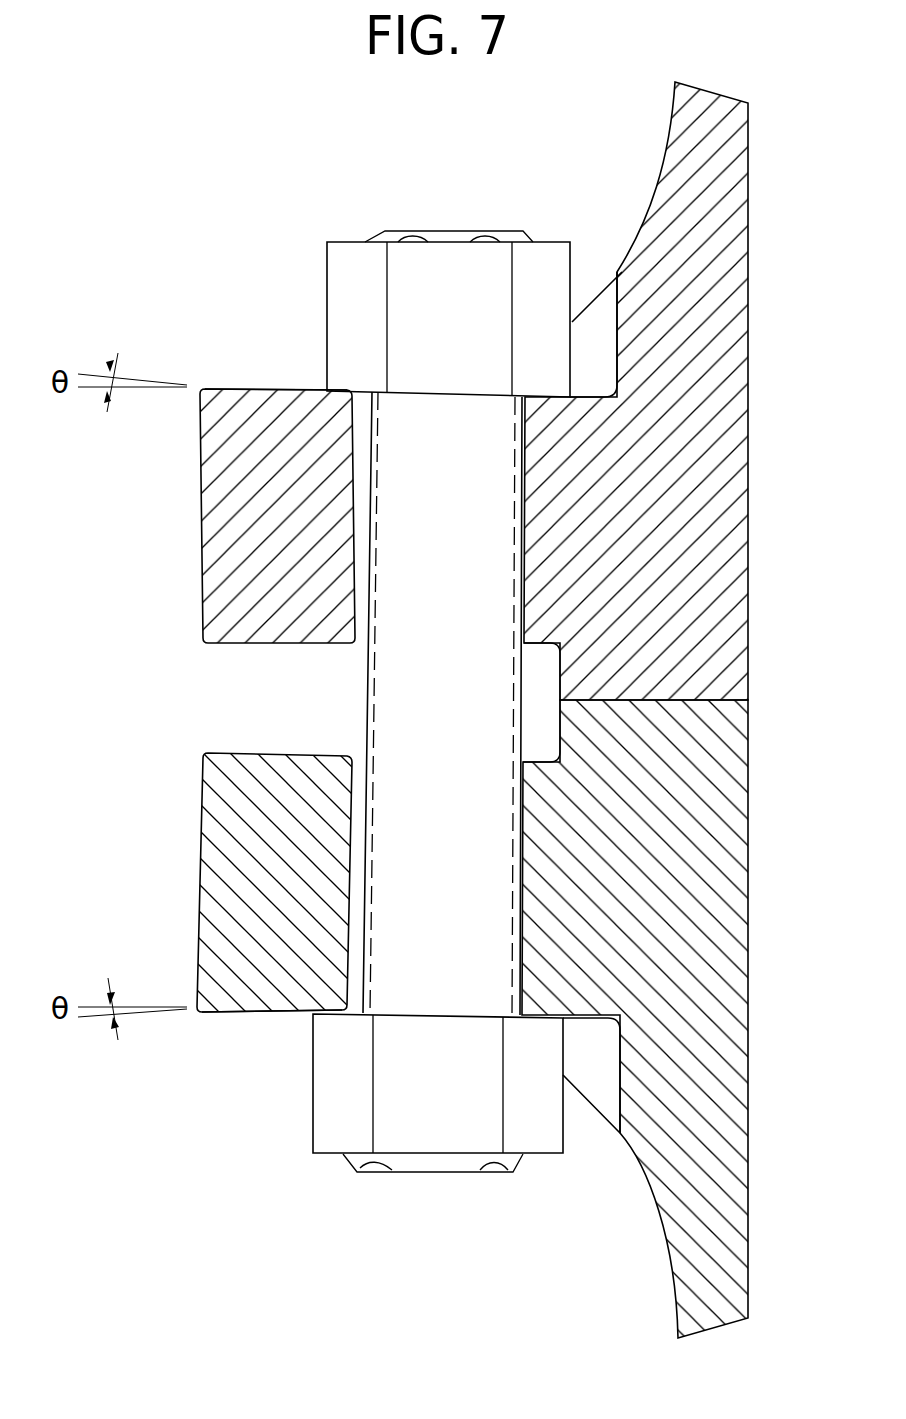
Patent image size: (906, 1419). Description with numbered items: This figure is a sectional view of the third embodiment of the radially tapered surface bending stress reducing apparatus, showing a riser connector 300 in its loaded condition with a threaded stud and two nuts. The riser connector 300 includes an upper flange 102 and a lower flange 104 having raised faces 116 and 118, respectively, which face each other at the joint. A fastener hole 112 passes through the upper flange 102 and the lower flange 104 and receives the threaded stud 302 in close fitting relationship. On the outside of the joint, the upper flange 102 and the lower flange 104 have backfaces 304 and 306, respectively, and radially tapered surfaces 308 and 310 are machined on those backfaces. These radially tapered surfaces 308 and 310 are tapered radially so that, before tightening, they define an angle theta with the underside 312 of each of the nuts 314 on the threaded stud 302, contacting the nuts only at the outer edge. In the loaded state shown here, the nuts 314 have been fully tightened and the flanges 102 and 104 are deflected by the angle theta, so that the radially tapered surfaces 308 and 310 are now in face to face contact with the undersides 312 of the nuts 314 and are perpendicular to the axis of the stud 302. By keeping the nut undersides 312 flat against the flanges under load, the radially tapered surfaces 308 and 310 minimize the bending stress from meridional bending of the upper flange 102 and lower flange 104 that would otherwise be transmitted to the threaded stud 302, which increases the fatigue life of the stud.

The upper flange 102 is at (203, 606).
The lower flange 104 is at (200, 822).
The fastener hole 112 is at (360, 755).
The raised face 116 is at (703, 704).
The raised face 118 is at (720, 698).
The riser connector 300 is at (170, 730).
The threaded stud 302 is at (525, 665).
The backface 304 is at (268, 388).
The backface 306 is at (243, 1013).
The radially tapered surface 308 is at (550, 396).
The radially tapered surface 310 is at (583, 1019).
The underside of nut 312 is at (407, 393).
The nuts 314 is at (449, 237).